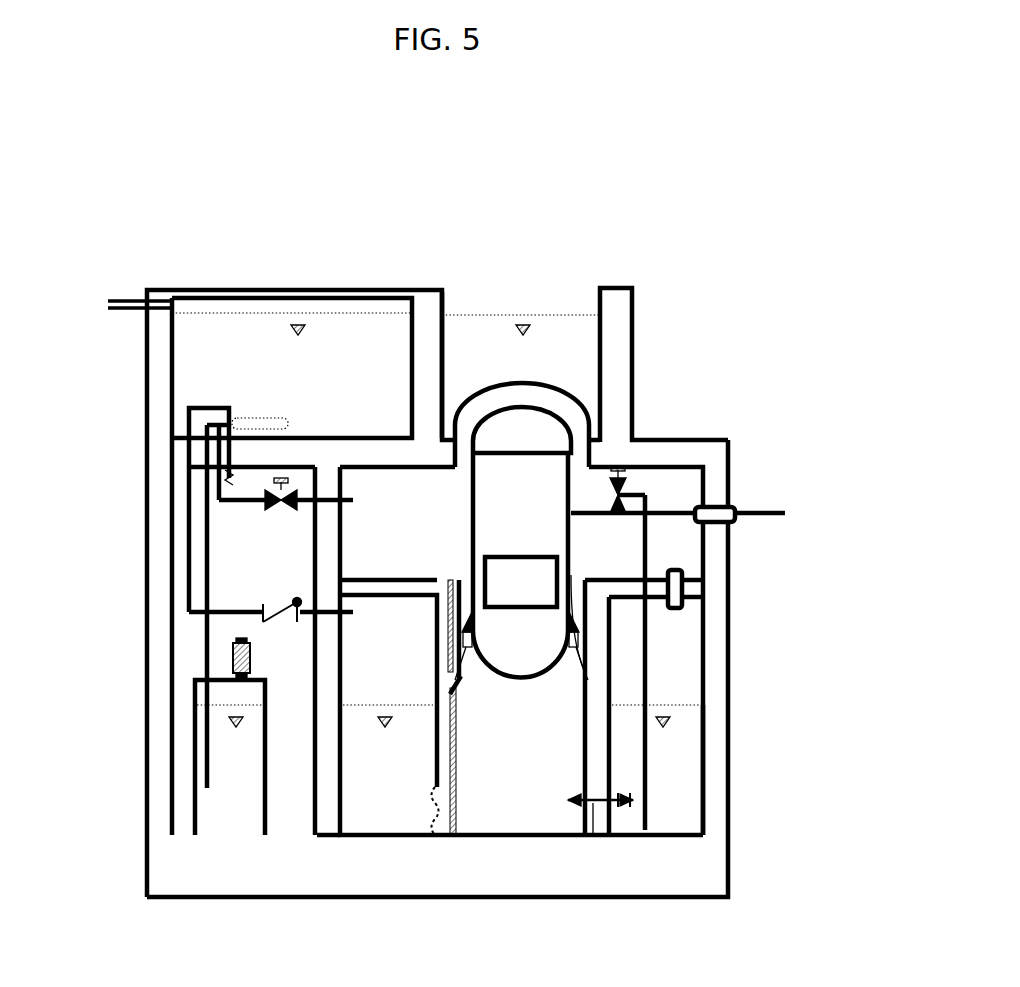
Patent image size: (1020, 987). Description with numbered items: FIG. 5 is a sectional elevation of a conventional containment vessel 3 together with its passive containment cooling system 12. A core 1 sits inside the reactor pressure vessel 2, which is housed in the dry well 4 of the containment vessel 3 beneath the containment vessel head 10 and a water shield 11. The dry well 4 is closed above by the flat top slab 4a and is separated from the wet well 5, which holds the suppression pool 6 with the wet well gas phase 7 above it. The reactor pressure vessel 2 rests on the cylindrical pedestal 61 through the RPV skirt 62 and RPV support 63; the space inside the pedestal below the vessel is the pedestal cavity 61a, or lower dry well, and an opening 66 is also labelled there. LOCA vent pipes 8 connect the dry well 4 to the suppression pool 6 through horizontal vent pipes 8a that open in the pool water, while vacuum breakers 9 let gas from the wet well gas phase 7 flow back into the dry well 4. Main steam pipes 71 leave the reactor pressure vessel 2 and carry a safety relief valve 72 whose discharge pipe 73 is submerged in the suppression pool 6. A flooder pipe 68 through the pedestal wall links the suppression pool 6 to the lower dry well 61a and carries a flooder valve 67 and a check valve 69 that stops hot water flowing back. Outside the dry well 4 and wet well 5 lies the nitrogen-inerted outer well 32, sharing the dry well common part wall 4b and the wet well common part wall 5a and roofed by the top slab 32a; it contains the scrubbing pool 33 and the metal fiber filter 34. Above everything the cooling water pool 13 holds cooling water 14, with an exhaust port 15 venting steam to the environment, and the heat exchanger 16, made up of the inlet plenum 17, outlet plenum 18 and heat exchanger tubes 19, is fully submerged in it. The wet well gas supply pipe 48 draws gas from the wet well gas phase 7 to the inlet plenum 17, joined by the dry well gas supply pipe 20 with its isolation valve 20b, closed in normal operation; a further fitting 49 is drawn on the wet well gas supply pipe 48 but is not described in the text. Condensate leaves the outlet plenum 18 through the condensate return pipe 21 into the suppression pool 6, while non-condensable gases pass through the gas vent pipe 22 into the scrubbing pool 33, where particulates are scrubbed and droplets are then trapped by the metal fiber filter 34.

The core 1 is at (521, 582).
The reactor pressure vessel 2 is at (522, 559).
The containment vessel 3 is at (745, 589).
The dry well 4 is at (677, 492).
The top slab 4a is at (370, 462).
The dry well common part wall 4b is at (328, 565).
The wet well 5 is at (722, 687).
The wet well common part wall 5a is at (325, 778).
The suppression pool 6 is at (683, 777).
The wet well gas phase 7 is at (657, 648).
The LOCA vent pipe 8 is at (430, 742).
The horizontal vent pipe 8a is at (425, 807).
The vacuum breaker 9 is at (673, 570).
The containment vessel head 10 is at (588, 414).
The water shield 11 is at (548, 316).
The passive containment cooling system 12 is at (236, 266).
The cooling water pool 13 is at (205, 312).
The cooling water 14 is at (340, 316).
The exhaust port 15 is at (108, 303).
The heat exchanger 16 is at (257, 358).
The inlet plenum 17 is at (232, 418).
The outlet plenum 18 is at (227, 425).
The heat exchanger tube 19 is at (267, 420).
The dry well gas supply pipe 20 is at (240, 502).
The valve 20b is at (285, 503).
The condensate return pipe 21 is at (228, 462).
The gas vent pipe 22 is at (203, 755).
The outer well 32 is at (180, 678).
The top slab 32a is at (168, 450).
The scrubbing pool 33 is at (225, 808).
The metal fiber filter 34 is at (230, 660).
The wet well gas supply pipe 48 is at (187, 578).
The check valve 49 is at (277, 603).
The pedestal 61 is at (460, 752).
The pedestal cavity 61a is at (540, 825).
The RPV skirt 62 is at (573, 615).
The RPV support 63 is at (568, 682).
The opening 66 is at (458, 685).
The flooder valve 67 is at (575, 800).
The flooder pipe 68 is at (593, 805).
The check valve 69 is at (633, 803).
The main steam pipe 71 is at (745, 513).
The safety relief valve 72 is at (623, 495).
The discharge pipe 73 is at (650, 757).